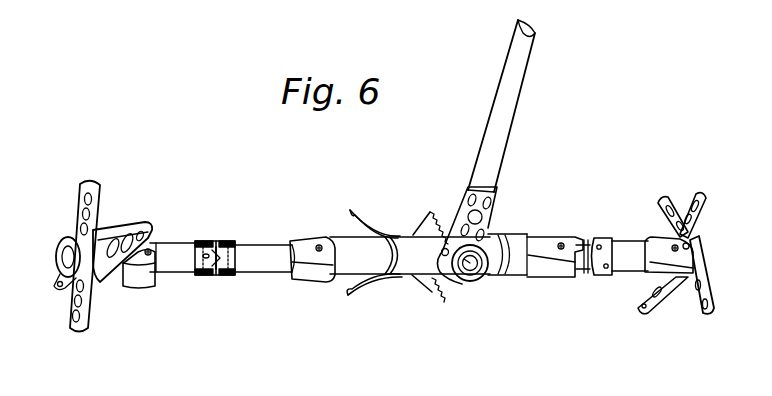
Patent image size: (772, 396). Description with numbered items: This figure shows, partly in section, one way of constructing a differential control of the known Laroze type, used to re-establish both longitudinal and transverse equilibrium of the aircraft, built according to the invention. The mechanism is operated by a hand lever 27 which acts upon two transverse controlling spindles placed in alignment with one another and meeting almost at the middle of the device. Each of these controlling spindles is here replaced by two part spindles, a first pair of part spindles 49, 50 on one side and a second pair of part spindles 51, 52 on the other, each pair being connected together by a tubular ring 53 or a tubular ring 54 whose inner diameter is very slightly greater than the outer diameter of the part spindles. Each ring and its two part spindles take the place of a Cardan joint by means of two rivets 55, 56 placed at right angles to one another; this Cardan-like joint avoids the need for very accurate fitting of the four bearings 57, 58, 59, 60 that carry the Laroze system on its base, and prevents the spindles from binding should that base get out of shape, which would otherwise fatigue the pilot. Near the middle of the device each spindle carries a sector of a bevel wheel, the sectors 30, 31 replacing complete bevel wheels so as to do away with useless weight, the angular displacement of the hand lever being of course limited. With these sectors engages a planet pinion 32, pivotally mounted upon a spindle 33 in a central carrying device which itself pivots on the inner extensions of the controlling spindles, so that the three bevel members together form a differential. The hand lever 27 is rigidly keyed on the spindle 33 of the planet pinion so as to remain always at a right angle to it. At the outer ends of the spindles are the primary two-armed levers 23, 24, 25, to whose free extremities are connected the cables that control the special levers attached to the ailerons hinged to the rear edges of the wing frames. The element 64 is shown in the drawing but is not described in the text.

The primary two armed lever 23 is at (150, 222).
The primary two armed lever 24 is at (74, 214).
The primary two armed lever 25 is at (712, 314).
The hand lever 27 is at (498, 148).
The sector of bevel wheel 30 is at (463, 286).
The sector of bevel wheel 31 is at (352, 228).
The planet pinion 32 is at (415, 235).
The spindle 33 is at (483, 284).
The part spindle 49 is at (167, 253).
The part spindle 50 is at (255, 255).
The part spindle 51 is at (580, 248).
The part spindle 52 is at (633, 250).
The tubular ring 53 is at (210, 238).
The tubular ring 54 is at (605, 247).
The rivet 55 is at (205, 260).
The rivet 56 is at (223, 270).
The bearing 57 is at (137, 282).
The bearing 58 is at (315, 273).
The bearing 59 is at (558, 266).
The bearing 60 is at (650, 266).
The arm 64 is at (658, 297).